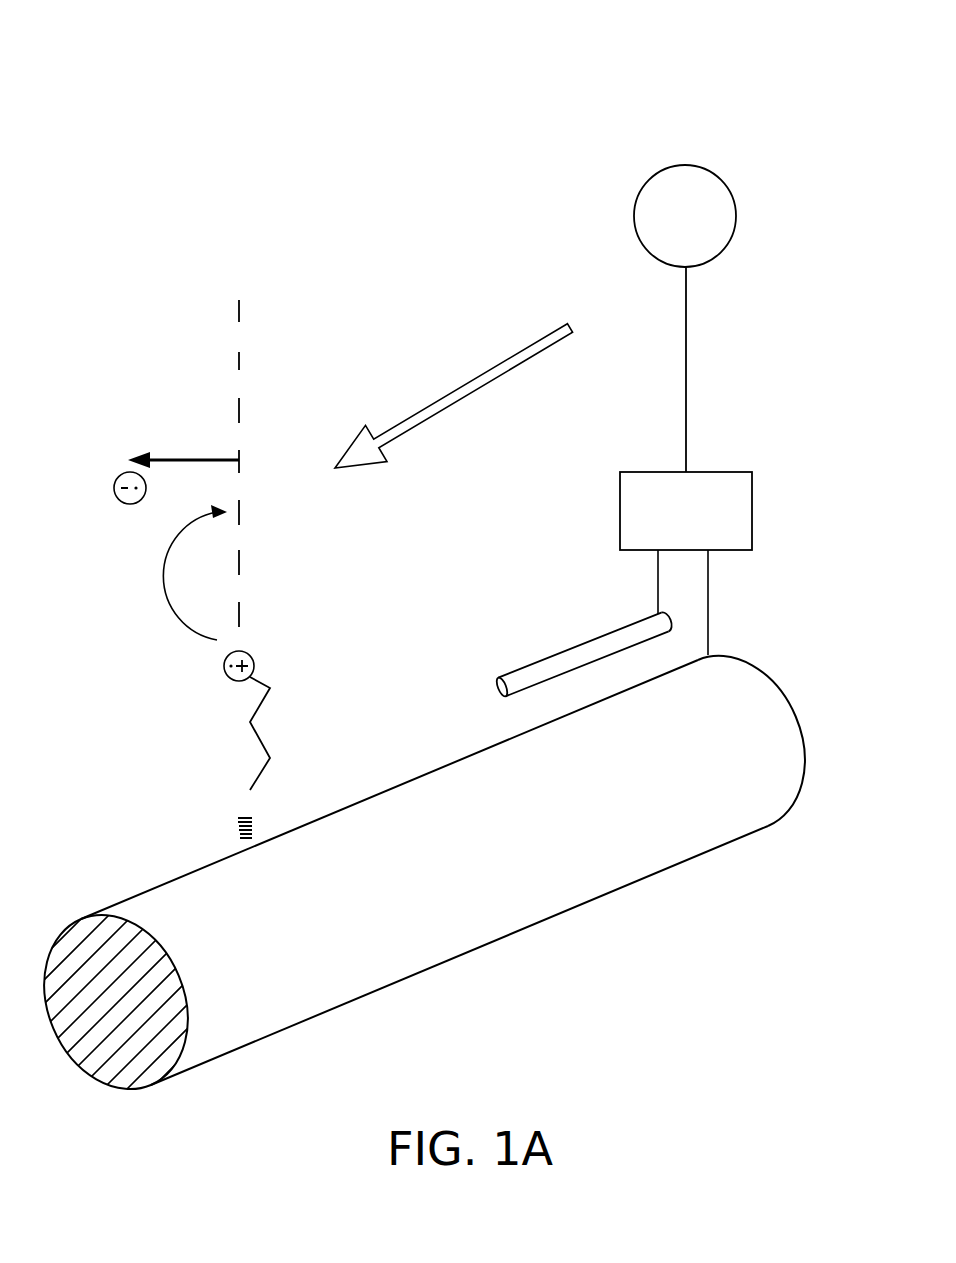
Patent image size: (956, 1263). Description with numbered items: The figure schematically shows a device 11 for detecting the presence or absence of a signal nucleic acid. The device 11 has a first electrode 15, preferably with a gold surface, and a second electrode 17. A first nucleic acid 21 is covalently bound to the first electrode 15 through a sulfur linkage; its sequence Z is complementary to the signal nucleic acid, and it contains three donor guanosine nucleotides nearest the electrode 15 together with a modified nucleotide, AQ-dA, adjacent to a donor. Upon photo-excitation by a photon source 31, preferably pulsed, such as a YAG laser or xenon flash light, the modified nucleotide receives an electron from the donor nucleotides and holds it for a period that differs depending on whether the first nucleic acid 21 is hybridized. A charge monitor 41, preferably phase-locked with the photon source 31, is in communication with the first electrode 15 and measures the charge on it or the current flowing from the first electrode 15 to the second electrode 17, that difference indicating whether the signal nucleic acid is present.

The device 11 is at (170, 88).
The first nucleic acid 21 is at (225, 386).
The first electrode 15 is at (718, 833).
The second electrode 17 is at (570, 647).
The photon source 31 is at (734, 198).
The charge monitor 41 is at (752, 497).